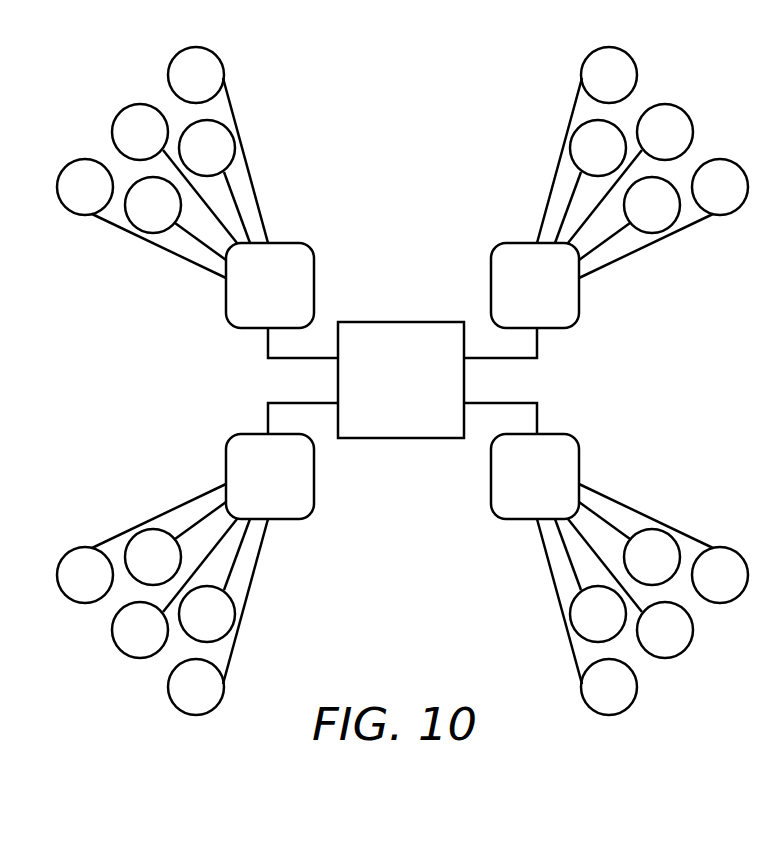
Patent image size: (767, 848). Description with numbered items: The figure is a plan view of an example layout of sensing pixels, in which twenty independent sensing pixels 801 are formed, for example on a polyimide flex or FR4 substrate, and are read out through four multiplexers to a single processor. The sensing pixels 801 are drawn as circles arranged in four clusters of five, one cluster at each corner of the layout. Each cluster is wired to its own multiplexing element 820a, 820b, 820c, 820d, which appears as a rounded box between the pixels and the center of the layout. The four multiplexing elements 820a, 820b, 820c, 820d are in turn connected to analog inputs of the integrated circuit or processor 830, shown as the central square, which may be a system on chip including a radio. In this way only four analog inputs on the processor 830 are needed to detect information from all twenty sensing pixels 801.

The sensing pixels 801 is at (198, 138).
The multiplexing element 820a is at (243, 298).
The multiplexing element 820b is at (508, 298).
The multiplexing element 820c is at (243, 490).
The multiplexing element 820d is at (508, 490).
The processor 830 is at (380, 393).